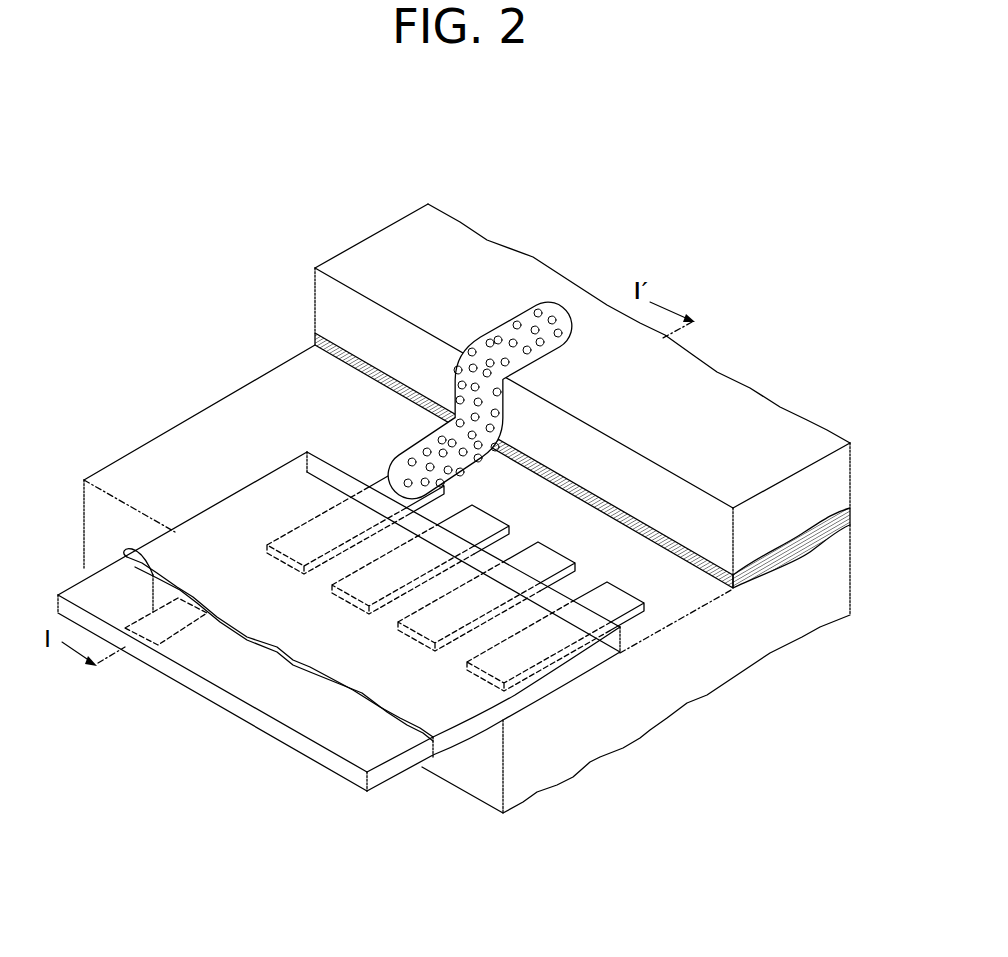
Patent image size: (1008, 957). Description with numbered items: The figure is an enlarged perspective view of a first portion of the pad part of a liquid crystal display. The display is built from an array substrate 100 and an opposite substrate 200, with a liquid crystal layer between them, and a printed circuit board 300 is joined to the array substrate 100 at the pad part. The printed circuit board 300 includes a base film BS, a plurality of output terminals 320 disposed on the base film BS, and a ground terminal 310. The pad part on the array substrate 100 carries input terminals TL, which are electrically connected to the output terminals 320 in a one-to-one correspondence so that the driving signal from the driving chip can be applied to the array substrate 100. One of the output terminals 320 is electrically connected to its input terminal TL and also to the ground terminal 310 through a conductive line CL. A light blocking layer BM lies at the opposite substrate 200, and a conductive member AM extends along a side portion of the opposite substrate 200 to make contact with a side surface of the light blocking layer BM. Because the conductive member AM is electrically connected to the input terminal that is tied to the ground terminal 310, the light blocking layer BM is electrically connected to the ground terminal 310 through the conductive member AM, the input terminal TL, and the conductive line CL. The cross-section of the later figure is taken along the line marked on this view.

The array substrate 100 is at (632, 722).
The opposite substrate 200 is at (744, 398).
The printed circuit board 300 is at (213, 328).
The ground terminal 310 is at (85, 480).
The output terminals 320 is at (312, 530).
The conductive member AM is at (546, 306).
The light blocking layer BM is at (758, 573).
The base film BS is at (187, 530).
The conductive line CL is at (241, 577).
The input terminals TL is at (375, 493).